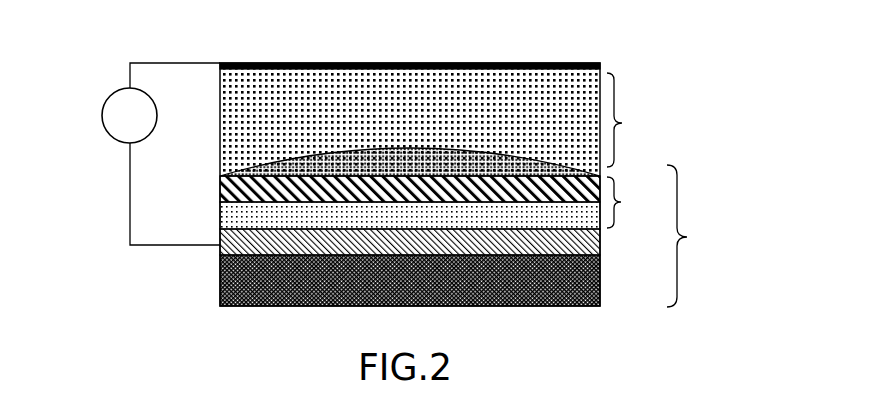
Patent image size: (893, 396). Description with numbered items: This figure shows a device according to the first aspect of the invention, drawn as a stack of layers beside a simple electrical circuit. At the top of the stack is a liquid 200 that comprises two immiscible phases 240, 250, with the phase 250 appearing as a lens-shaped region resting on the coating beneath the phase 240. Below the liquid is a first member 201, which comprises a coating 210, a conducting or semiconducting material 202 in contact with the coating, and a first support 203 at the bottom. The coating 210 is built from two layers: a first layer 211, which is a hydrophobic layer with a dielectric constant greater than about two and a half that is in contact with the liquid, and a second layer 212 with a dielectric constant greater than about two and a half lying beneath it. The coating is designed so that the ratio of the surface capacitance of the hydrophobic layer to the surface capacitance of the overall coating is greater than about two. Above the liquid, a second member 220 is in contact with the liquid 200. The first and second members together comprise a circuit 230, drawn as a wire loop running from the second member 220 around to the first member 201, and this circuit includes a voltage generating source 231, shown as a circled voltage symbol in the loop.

The liquid 200 is at (639, 120).
The first member 201 is at (700, 236).
The conducting or semiconducting material 202 is at (225, 248).
The first support 203 is at (225, 290).
The coating 210 is at (635, 202).
The first layer (hydrophobic layer) 211 is at (220, 183).
The second layer 212 is at (220, 215).
The second member 220 is at (535, 63).
The circuit 230 is at (130, 190).
The voltage generating source 231 is at (112, 105).
The first immiscible phase 240 is at (262, 95).
The second immiscible phase 250 is at (300, 163).